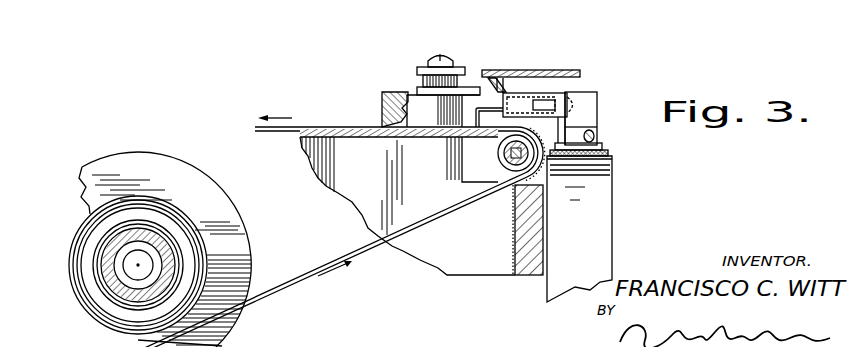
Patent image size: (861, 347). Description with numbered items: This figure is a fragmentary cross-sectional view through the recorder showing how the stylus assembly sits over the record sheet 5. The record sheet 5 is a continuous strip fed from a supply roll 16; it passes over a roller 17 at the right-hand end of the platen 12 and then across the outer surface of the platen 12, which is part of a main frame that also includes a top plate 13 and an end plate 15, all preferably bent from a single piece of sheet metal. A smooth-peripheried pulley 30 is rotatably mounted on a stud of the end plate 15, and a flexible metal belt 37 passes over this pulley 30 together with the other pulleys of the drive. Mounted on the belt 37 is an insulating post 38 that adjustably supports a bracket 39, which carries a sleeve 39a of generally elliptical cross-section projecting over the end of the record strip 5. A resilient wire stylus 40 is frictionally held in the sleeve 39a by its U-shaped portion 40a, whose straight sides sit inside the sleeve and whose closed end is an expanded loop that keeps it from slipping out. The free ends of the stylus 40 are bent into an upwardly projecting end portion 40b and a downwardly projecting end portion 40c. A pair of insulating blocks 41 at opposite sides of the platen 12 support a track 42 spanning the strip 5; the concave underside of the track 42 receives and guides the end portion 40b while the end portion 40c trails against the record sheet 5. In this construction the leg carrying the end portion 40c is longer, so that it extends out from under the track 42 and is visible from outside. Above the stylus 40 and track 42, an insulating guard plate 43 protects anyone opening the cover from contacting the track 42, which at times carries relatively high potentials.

The record sheet 5 is at (290, 118).
The platen 12 is at (332, 126).
The top plate 13 is at (413, 246).
The end plate 15 is at (527, 272).
The supply roll 16 is at (153, 218).
The roller 17 is at (497, 154).
The pulley 30 is at (600, 176).
The belt 37 is at (608, 152).
The post 38 is at (595, 116).
The bracket 39 is at (545, 98).
The sleeve 39a is at (515, 118).
The stylus 40 is at (528, 91).
The U-shaped portion 40a is at (567, 118).
The upwardly projecting end portion 40b is at (507, 78).
The downwardly projecting end portion 40c is at (476, 108).
The insulating blocks 41 is at (388, 112).
The track 42 is at (470, 69).
The guard plate 43 is at (565, 72).